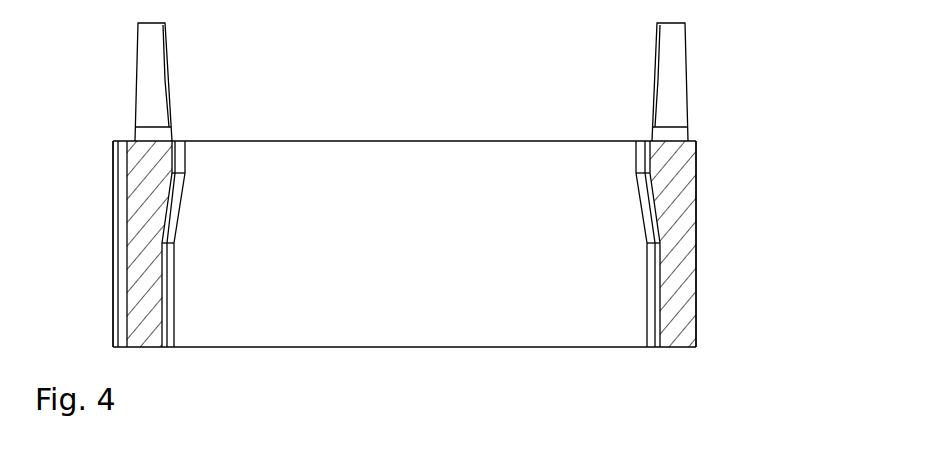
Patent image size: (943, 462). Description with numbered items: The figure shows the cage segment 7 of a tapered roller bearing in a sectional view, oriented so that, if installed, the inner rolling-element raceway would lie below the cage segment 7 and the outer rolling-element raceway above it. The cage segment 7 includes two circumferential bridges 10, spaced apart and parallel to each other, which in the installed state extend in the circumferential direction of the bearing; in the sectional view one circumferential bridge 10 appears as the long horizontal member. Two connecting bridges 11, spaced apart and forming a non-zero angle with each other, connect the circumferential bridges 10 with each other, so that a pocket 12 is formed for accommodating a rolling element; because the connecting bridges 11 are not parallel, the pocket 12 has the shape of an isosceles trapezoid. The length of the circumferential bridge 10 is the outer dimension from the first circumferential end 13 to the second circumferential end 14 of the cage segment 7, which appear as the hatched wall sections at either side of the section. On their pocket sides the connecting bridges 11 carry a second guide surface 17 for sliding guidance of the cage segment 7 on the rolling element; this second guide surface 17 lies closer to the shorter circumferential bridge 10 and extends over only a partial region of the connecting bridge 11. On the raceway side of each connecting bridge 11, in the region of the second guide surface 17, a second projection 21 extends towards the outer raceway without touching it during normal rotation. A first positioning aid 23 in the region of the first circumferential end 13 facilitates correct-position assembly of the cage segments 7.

The cage segment 7 is at (712, 317).
The circumferential bridge 10 is at (404, 134).
The connecting bridge 11 is at (103, 215).
The pocket 12 is at (430, 319).
The first circumferential end 13 is at (127, 275).
The second circumferential end 14 is at (698, 260).
The second guide surface 17 is at (170, 192).
The second projection 21 is at (135, 83).
The first positioning aid 23 is at (113, 159).